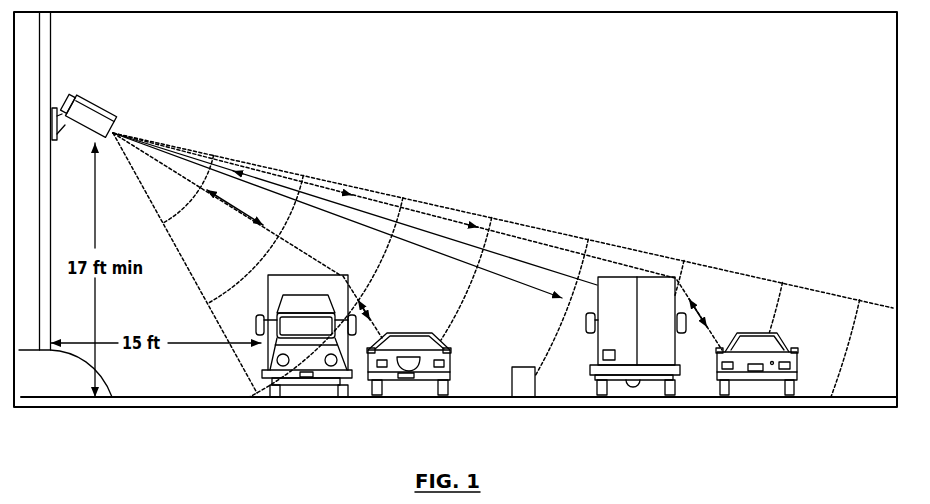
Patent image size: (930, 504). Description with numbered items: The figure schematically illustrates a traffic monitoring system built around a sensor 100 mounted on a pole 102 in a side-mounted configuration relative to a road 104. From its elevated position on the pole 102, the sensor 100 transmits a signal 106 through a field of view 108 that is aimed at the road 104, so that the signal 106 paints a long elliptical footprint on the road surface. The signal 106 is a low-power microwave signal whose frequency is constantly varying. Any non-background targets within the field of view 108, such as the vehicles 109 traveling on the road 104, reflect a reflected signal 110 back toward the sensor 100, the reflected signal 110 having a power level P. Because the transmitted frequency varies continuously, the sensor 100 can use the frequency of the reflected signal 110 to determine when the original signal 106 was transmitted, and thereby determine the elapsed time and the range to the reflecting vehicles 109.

The sensor 100 is at (100, 97).
The pole 102 is at (51, 47).
The road 104 is at (772, 407).
The signal 106 is at (337, 221).
The field of view 108 is at (475, 293).
The vehicles 109 is at (390, 378).
The reflected signal 110 is at (355, 209).